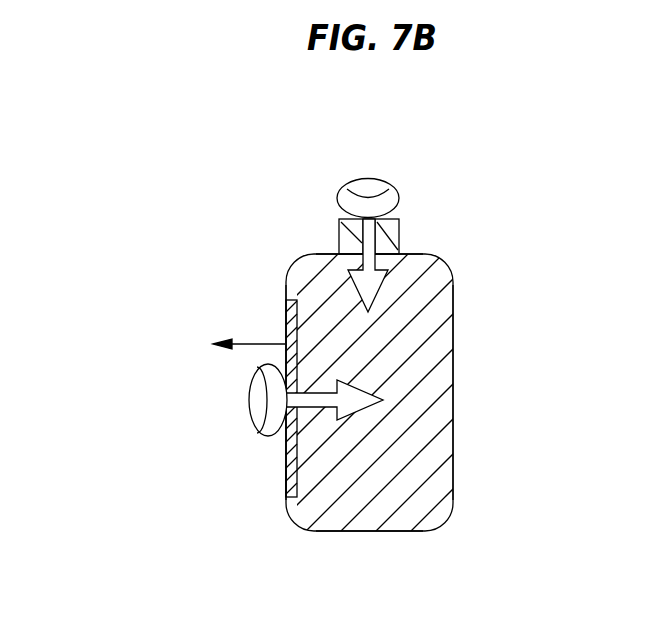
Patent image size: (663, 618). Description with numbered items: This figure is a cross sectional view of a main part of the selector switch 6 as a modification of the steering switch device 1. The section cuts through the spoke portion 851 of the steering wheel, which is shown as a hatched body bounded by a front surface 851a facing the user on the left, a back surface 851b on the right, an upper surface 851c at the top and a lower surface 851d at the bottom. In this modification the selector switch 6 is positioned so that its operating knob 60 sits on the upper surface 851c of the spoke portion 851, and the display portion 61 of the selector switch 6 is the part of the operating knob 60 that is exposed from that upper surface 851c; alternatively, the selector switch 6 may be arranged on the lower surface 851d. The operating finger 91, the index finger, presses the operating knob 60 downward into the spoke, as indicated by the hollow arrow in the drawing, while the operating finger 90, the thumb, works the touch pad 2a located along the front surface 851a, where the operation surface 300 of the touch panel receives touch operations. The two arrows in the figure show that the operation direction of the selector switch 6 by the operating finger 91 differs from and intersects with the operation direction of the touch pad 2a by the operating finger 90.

The liquid ejecting apparatus 1 is at (553, 210).
The selector switch 6 is at (405, 214).
The operating finger 91 is at (368, 200).
The operating knob 60 is at (358, 243).
The display portion 61 is at (340, 245).
The spoke portion 851 is at (397, 520).
The front surface 851a is at (287, 293).
The back surface 851b is at (453, 478).
The upper surface 851c is at (403, 260).
The lower surface 851d is at (338, 531).
The touch pad 2a is at (290, 303).
The operation surface 300 is at (285, 478).
The operating finger 90 is at (267, 423).